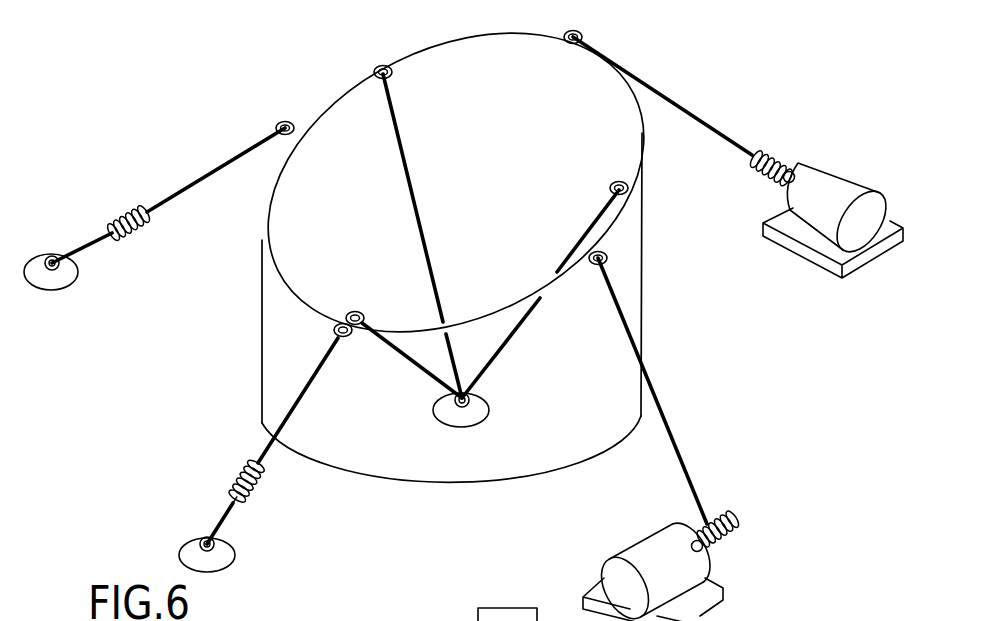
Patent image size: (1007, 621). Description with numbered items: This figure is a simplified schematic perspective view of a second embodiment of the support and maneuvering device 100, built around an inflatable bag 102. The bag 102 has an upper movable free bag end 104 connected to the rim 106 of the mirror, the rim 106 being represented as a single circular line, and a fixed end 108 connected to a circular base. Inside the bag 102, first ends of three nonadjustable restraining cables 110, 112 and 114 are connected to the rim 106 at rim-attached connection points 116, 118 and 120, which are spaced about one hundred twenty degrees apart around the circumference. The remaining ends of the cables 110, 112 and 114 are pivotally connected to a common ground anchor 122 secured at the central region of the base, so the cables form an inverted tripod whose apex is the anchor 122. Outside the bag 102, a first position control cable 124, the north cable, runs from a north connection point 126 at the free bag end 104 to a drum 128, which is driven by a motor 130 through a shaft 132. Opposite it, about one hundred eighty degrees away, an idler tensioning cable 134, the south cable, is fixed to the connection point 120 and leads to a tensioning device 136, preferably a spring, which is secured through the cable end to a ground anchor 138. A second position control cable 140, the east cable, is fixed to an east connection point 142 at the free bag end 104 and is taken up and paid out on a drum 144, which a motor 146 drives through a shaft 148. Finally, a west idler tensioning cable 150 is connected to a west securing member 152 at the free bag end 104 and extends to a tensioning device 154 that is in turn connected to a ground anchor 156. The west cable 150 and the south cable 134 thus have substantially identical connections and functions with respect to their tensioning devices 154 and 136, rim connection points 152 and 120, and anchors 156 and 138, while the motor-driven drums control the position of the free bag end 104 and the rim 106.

The support and maneuvering device 100 is at (133, 80).
The inflatable bag 102 is at (486, 264).
The free bag end 104 is at (643, 165).
The rim 106 is at (483, 32).
The fixed end 108 is at (448, 482).
The nonadjustable restraining cable 110 is at (578, 237).
The nonadjustable restraining cable 112 is at (408, 158).
The nonadjustable restraining cable 114 is at (442, 392).
The connection point 116 is at (620, 180).
The connection point 118 is at (375, 64).
The connection point 120 is at (356, 311).
The ground anchor 122 is at (465, 412).
The first position control cable 124 is at (690, 97).
The connection point 126 is at (585, 33).
The drum 128 is at (780, 157).
The motor 130 is at (833, 237).
The shaft 132 is at (792, 172).
The idler tensioning cable 134 is at (288, 400).
The tensioning device 136 is at (240, 478).
The ground anchor 138 is at (198, 537).
The second position control cable 140 is at (662, 423).
The connection point 142 is at (609, 253).
The drum 144 is at (735, 520).
The motor 146 is at (642, 555).
The shaft 148 is at (700, 553).
The idler tensioning cable 150 is at (190, 178).
The securing member 152 is at (281, 120).
The tensioning device 154 is at (125, 234).
The ground anchor 156 is at (55, 275).